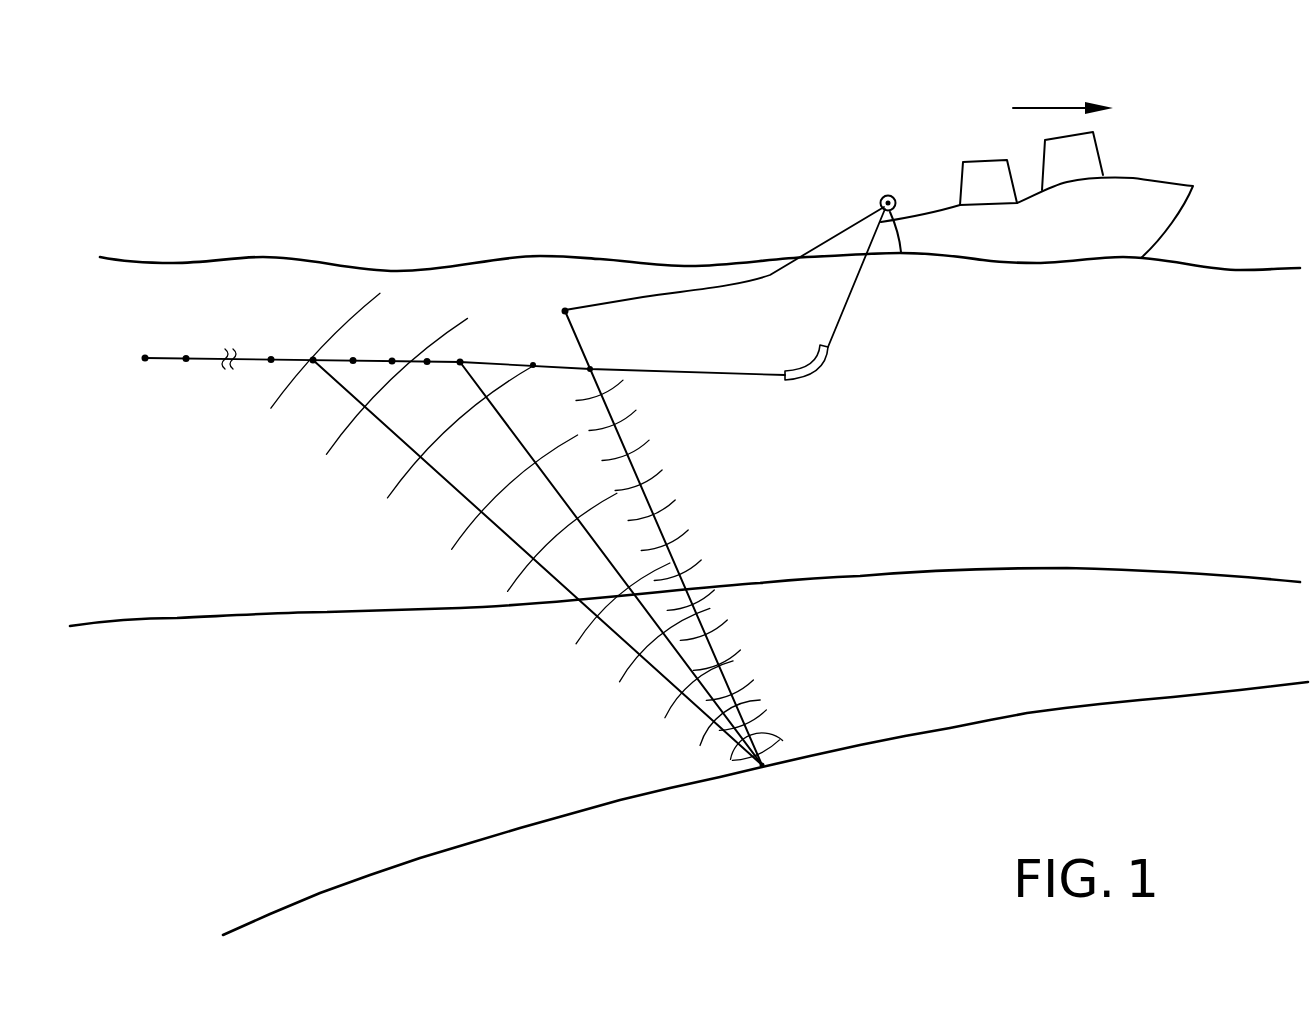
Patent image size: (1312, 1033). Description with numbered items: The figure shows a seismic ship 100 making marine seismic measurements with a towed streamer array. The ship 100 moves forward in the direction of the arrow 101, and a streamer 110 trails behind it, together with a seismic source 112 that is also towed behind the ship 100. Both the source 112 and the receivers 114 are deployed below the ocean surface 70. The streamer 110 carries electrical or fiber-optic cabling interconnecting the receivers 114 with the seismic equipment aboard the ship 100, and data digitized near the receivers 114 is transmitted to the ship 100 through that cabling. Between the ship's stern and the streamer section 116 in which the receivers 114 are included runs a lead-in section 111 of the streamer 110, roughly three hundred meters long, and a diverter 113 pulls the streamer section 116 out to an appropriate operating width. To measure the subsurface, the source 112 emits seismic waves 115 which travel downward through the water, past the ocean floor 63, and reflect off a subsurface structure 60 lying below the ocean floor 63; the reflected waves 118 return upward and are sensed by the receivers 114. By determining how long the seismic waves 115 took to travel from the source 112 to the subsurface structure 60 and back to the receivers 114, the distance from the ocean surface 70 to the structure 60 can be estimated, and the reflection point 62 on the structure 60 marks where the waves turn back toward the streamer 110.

The subsurface structure 60 is at (1173, 697).
The reflection point 62 is at (763, 770).
The ocean floor 63 is at (1066, 570).
The ocean surface 70 is at (1229, 268).
The ship 100 is at (1163, 183).
The arrow 101 is at (1052, 107).
The streamer 110 is at (503, 357).
The lead-in section 111 is at (855, 281).
The source 112 is at (567, 313).
The diverter 113 is at (814, 378).
The receivers 114 is at (277, 347).
The seismic waves 115 is at (682, 550).
The streamer section 116 is at (545, 367).
The reflected wavefronts 118 is at (442, 478).